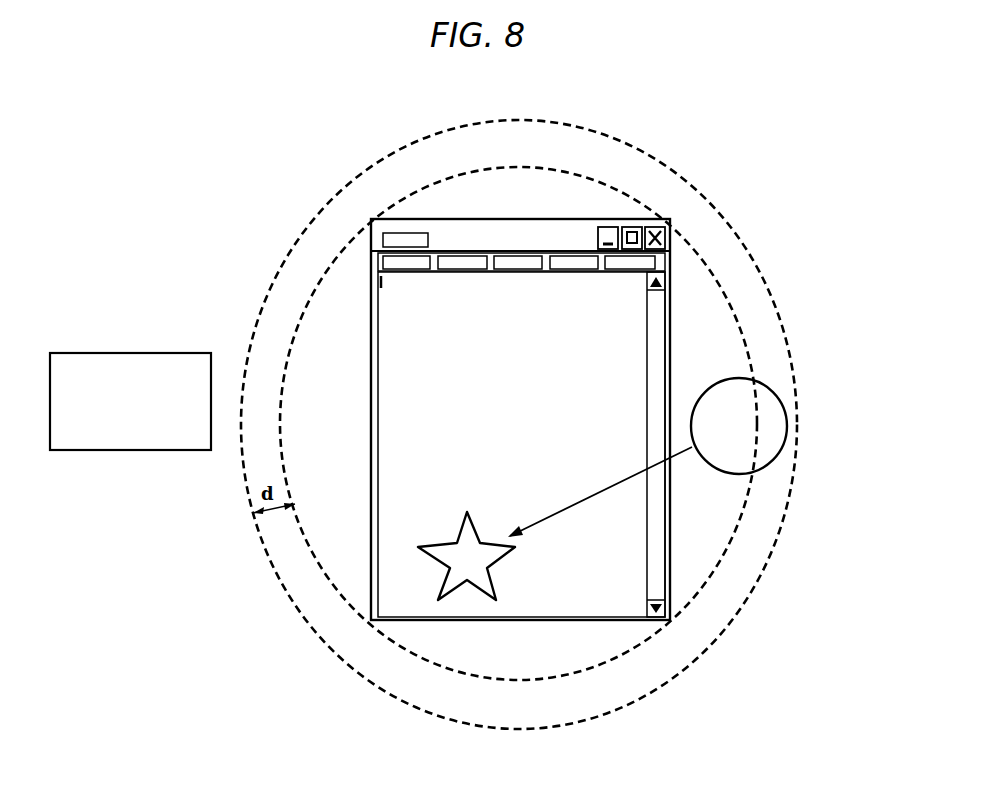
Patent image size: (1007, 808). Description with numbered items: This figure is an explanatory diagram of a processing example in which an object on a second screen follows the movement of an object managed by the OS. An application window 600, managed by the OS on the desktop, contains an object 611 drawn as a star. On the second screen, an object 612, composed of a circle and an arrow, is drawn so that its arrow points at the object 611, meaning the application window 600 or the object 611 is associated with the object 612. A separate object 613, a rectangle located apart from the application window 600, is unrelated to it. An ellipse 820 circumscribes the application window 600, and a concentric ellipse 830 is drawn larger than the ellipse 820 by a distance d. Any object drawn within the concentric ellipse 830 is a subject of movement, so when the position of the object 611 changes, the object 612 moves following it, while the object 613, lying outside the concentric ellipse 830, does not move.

The application window 600 is at (373, 503).
The object 611 is at (430, 547).
The object 612 is at (785, 407).
The object 613 is at (137, 353).
The ellipse 820 is at (717, 570).
The concentric ellipse 830 is at (712, 645).